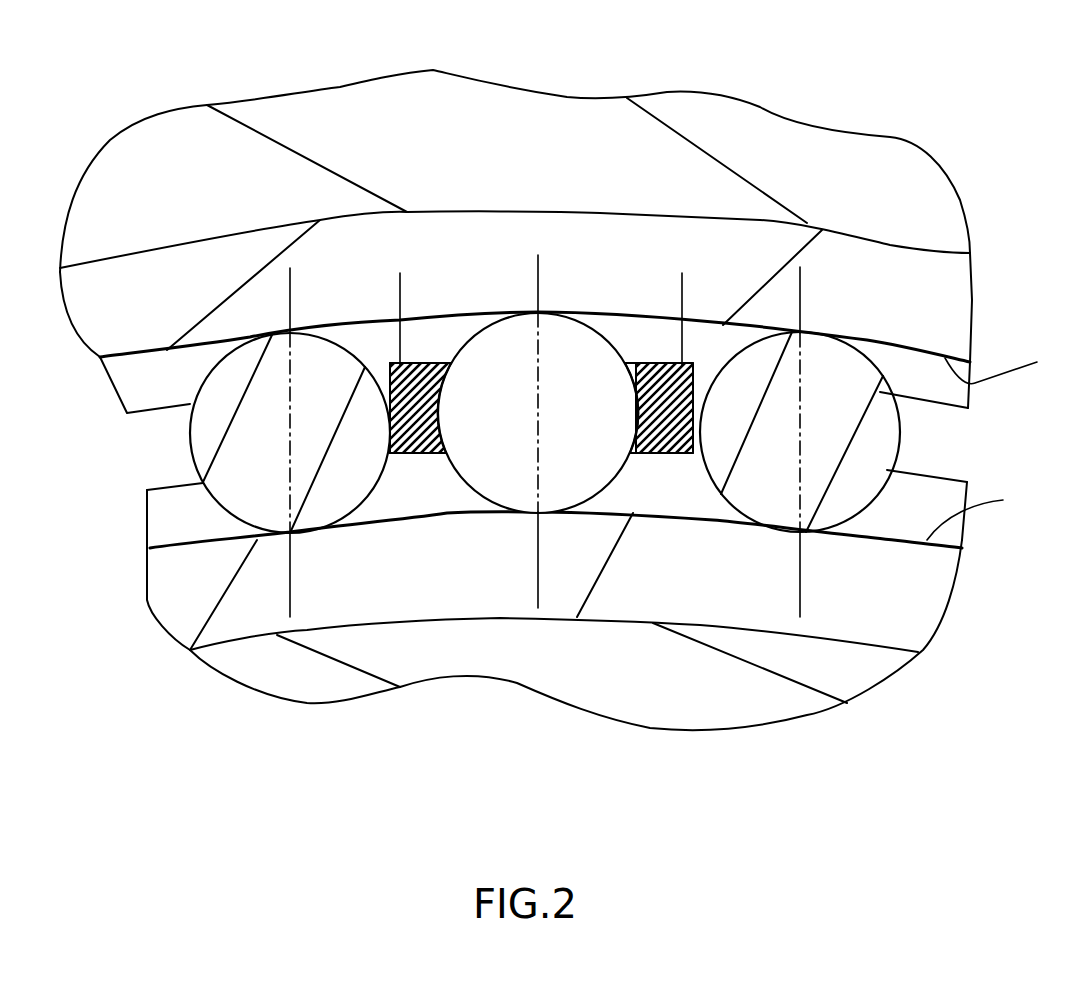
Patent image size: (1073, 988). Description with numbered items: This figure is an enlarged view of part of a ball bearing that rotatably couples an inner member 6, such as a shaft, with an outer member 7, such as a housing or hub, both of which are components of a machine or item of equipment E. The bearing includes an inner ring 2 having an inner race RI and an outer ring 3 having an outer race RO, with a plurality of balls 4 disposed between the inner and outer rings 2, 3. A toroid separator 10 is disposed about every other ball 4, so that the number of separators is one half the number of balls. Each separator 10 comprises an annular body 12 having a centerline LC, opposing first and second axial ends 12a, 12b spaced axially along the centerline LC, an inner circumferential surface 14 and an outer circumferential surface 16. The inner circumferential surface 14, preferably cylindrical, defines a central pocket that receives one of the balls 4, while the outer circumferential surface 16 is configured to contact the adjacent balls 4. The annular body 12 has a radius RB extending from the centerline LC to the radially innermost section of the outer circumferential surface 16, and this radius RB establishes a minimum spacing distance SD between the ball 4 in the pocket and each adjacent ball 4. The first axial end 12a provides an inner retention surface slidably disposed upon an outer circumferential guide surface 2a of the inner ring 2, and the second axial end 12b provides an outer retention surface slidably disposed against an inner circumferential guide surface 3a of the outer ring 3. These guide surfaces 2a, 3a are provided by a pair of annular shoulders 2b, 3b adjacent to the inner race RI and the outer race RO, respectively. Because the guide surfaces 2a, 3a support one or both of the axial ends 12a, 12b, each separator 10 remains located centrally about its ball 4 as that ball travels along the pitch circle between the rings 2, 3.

The item of equipment E is at (185, 73).
The outer member 7 is at (913, 170).
The outer ring 3 is at (556, 324).
The inner circumferential surface of outer ring 3a is at (940, 406).
The annular shoulder of outer ring 3b is at (127, 378).
The inner ring 2 is at (555, 547).
The outer circumferential surface of inner ring 2a is at (945, 475).
The annular shoulder of inner ring 2b is at (157, 507).
The ball 4 is at (232, 362).
The inner member 6 is at (795, 712).
The toroid separator 10 is at (670, 490).
The annular body 12 is at (539, 452).
The first axial end 12a is at (405, 453).
The second axial end 12b is at (408, 362).
The inner circumferential surface 14 is at (637, 400).
The outer circumferential surface 16 is at (387, 400).
The outer race RO is at (1008, 367).
The inner race RI is at (981, 516).
The centerline LC is at (542, 267).
The radius of annular body RB is at (682, 280).
The minimum spacing distance SD is at (800, 602).